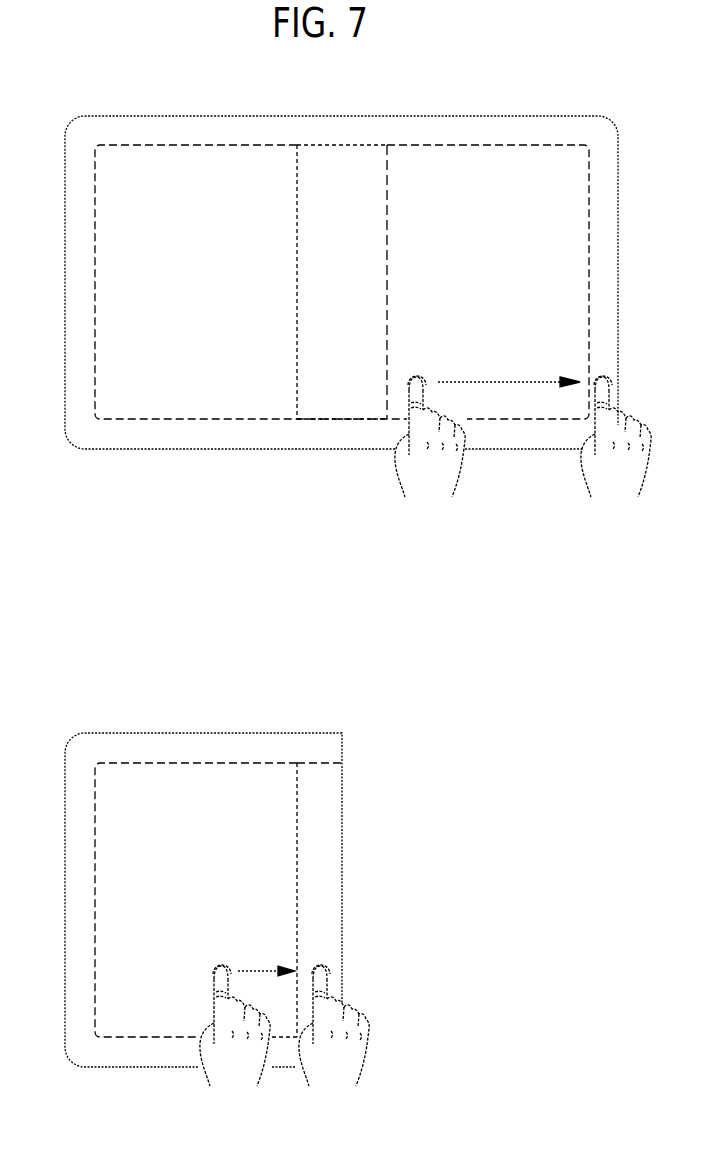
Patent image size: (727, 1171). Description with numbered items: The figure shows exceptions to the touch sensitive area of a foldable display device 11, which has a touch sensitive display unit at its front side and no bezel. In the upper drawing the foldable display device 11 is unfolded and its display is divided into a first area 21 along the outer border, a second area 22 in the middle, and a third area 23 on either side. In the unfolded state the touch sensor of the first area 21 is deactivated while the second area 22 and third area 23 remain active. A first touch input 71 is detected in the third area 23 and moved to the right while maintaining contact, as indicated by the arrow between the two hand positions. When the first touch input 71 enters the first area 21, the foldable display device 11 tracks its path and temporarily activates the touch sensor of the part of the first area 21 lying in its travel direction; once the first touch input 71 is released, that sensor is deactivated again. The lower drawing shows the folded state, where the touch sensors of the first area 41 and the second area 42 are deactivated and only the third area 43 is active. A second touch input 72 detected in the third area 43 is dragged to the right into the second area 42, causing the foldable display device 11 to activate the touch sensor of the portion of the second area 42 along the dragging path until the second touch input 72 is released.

The foldable display device 11 is at (172, 450).
The first area 21 is at (155, 132).
The second area 22 is at (368, 165).
The third area 23 is at (225, 165).
The first touch input 71 is at (417, 474).
The first area 41 is at (155, 750).
The second area 42 is at (330, 847).
The third area 43 is at (225, 785).
The second touch input 72 is at (239, 1068).